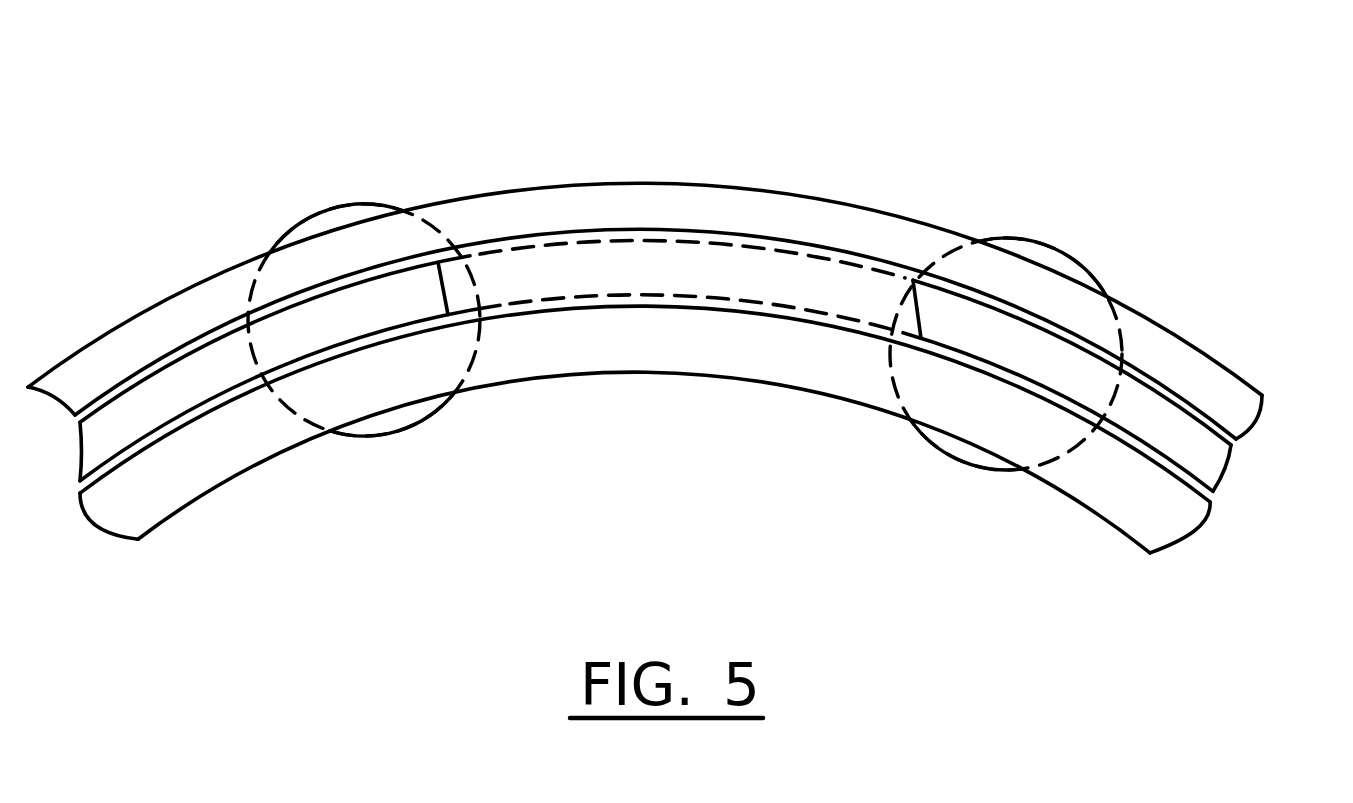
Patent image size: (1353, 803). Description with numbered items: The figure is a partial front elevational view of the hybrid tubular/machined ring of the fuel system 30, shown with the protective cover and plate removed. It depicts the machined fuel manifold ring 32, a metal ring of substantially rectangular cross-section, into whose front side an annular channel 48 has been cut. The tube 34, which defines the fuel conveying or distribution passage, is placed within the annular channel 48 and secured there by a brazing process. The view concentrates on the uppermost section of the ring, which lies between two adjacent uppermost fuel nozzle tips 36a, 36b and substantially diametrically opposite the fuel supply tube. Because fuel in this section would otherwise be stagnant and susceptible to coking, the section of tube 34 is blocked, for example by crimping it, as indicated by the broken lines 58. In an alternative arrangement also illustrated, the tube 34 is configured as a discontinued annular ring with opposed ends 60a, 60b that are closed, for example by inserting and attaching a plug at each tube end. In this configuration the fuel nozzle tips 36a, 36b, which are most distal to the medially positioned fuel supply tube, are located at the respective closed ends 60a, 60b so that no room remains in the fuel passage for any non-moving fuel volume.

The fuel system 30 is at (791, 144).
The machined fuel manifold ring 32 is at (917, 218).
The tube 34 is at (1180, 420).
The annular channel 48 is at (1138, 367).
The broken lines 58 is at (633, 240).
The fuel nozzle tip 36a is at (345, 205).
The fuel nozzle tip 36b is at (1070, 260).
The closed end 60a is at (500, 252).
The closed end 60b is at (897, 310).